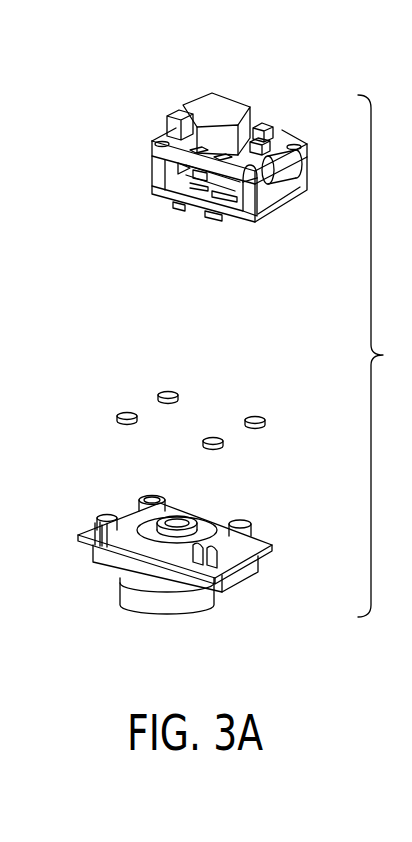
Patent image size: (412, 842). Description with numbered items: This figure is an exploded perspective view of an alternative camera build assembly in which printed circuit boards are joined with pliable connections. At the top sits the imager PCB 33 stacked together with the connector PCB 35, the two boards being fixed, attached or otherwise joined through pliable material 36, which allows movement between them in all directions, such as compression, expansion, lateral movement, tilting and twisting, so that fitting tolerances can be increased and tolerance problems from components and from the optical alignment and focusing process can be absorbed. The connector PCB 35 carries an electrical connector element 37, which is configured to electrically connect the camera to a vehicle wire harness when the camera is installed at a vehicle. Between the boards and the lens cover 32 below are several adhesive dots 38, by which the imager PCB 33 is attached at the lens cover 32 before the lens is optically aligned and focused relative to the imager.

The lens cover 32 is at (208, 588).
The imager PCB 33 is at (205, 203).
The connector PCB 35 is at (274, 129).
The pliable material 36 is at (157, 168).
The electrical connector element 37 is at (217, 128).
The adhesive dots 38 is at (168, 392).